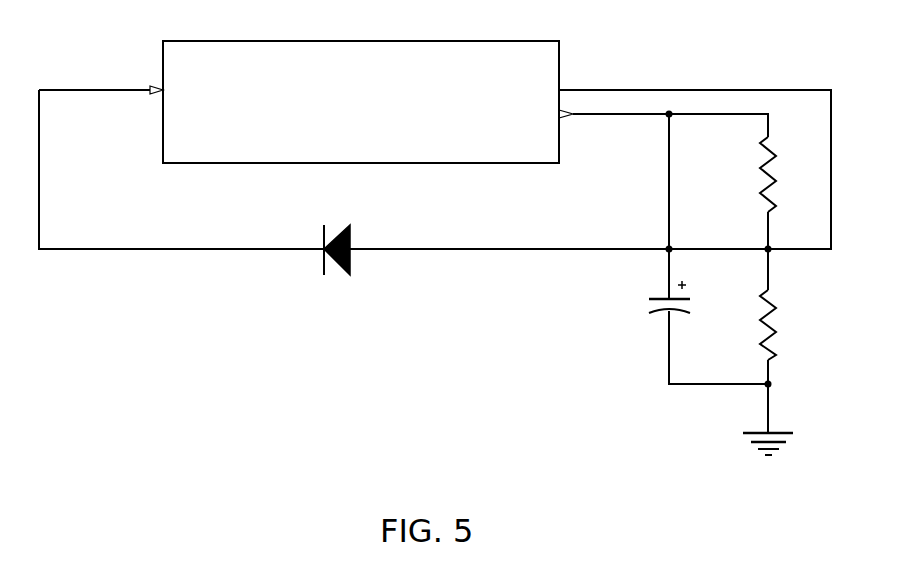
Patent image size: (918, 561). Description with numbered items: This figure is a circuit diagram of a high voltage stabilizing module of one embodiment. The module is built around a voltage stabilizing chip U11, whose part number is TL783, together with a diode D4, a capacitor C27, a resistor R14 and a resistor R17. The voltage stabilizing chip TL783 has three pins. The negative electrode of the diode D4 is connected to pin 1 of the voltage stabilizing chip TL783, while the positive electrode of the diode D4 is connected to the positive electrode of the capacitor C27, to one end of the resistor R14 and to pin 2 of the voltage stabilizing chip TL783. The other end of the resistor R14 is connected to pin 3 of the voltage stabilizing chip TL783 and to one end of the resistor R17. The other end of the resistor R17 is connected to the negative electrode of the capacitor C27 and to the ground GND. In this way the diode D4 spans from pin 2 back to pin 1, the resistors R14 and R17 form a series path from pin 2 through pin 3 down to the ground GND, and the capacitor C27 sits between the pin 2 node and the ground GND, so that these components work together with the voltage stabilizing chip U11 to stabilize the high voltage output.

The voltage regulator TL783 U11 is at (361, 92).
The voltage stabilizing chip TL783 is at (182, 176).
The pin 1 of the voltage stabilizing chip 1 is at (137, 83).
The pin 2 of the voltage stabilizing chip 2 is at (582, 105).
The pin 3 of the voltage stabilizing chip 3 is at (582, 79).
The diode D4 is at (336, 239).
The resistor R14 is at (782, 174).
The resistor R17 is at (782, 325).
The capacitor C27 is at (682, 297).
The ground GND is at (767, 457).